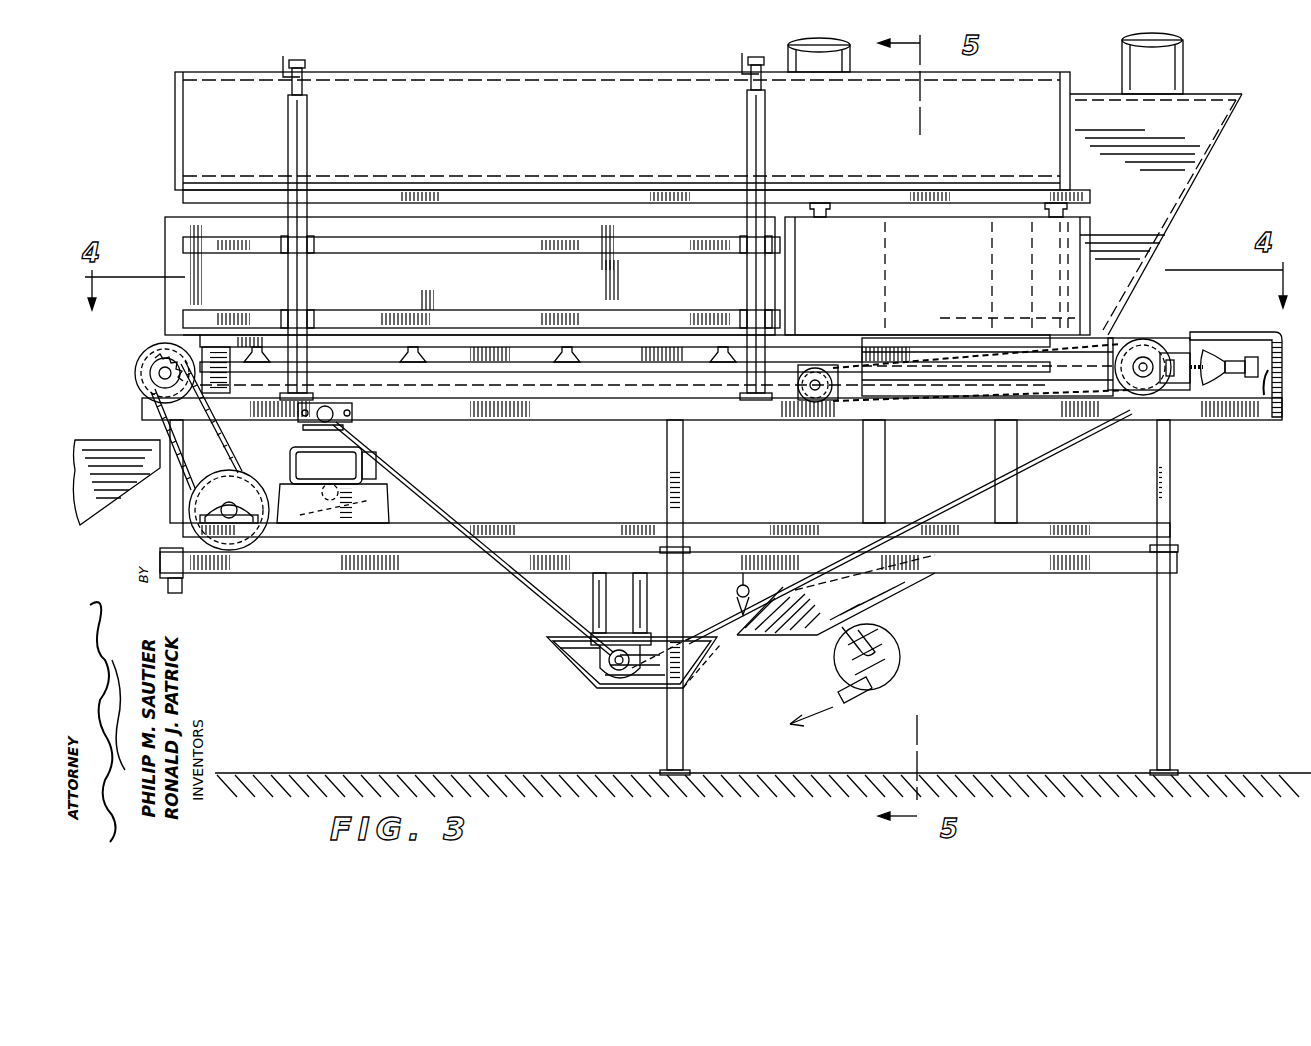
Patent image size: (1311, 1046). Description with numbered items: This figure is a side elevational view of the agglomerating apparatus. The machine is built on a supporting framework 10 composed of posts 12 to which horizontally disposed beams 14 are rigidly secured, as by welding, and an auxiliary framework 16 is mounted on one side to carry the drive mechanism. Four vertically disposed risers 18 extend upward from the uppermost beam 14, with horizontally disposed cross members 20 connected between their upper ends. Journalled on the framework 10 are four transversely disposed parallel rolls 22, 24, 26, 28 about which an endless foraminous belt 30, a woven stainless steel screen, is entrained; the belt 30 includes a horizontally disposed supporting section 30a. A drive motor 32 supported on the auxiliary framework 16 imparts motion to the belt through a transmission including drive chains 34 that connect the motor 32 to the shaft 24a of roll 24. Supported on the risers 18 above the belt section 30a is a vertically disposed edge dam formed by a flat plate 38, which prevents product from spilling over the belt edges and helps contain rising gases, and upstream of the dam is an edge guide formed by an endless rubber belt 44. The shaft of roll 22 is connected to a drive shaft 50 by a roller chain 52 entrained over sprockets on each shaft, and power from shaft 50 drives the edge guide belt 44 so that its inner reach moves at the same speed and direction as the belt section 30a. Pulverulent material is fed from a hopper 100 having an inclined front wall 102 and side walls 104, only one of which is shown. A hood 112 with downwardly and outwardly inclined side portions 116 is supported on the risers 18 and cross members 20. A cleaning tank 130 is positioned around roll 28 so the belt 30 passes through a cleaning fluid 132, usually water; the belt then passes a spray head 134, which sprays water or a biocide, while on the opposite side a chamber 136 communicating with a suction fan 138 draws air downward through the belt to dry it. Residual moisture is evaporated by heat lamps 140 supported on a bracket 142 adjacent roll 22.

The supporting framework 10 is at (290, 585).
The posts 12 is at (668, 472).
The horizontally disposed beams 14 is at (598, 421).
The auxiliary framework 16 is at (335, 573).
The risers 18 is at (308, 137).
The cross members 20 is at (285, 68).
The roll 22 is at (1155, 348).
The roll 24 is at (162, 348).
The shaft of roll 24 24a is at (160, 376).
The roll 26 is at (328, 422).
The roll 28 is at (597, 672).
The endless foraminous supporting member or belt 30 is at (415, 478).
The horizontally disposed supporting section 30a is at (187, 345).
The drive motor 32 is at (352, 470).
The drive chains 34 is at (236, 470).
The edge dam plate 38 is at (540, 296).
The edge guide belt 44 is at (1040, 243).
The drive shaft 50 is at (818, 405).
The roller chain 52 is at (925, 437).
The hopper 100 is at (1181, 184).
The inclined front wall 102 is at (1185, 200).
The side walls 104 is at (1190, 128).
The hood 112 is at (527, 66).
The inclined side portion 116 is at (534, 141).
The cleaning tank 130 is at (560, 645).
The cleaning fluid 132 is at (712, 670).
The spray head 134 is at (738, 592).
The chamber 136 is at (812, 640).
The suction fan 138 is at (898, 660).
The heat lamps 140 is at (1212, 360).
The bracket 142 is at (1282, 400).